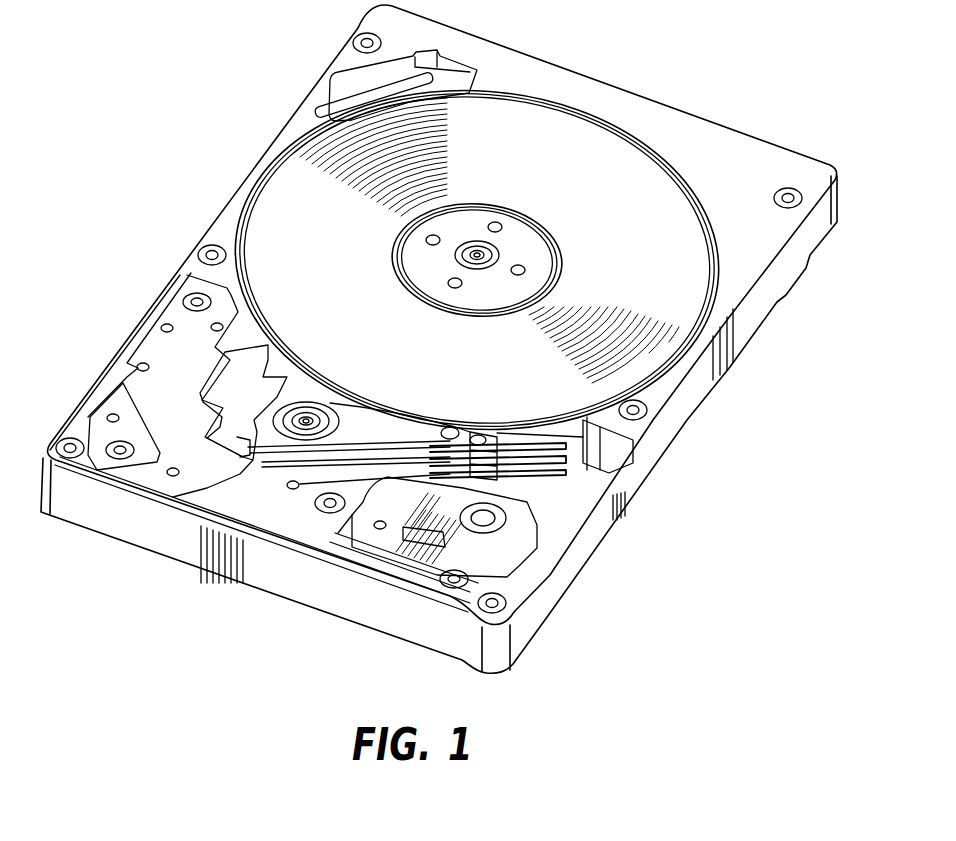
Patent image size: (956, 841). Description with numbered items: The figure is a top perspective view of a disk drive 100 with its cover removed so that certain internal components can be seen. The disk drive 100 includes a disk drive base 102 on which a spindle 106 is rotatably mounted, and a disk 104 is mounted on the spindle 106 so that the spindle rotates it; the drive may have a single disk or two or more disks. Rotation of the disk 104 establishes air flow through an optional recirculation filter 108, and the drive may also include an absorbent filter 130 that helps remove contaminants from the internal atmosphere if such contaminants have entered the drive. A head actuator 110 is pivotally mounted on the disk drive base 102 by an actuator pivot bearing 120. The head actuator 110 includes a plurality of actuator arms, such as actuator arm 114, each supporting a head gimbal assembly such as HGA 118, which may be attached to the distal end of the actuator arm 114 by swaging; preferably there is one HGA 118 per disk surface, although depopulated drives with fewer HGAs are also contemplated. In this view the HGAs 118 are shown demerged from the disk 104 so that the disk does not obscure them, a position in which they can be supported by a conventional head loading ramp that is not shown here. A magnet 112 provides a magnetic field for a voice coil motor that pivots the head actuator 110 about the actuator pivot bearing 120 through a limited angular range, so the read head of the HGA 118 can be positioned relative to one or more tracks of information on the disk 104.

The disk drive 100 is at (640, 60).
The disk drive base 102 is at (743, 317).
The disk 104 is at (333, 272).
The spindle 106 is at (477, 220).
The recirculation filter 108 is at (363, 95).
The head actuator 110 is at (173, 497).
The magnet 112 is at (160, 350).
The actuator arm 114 is at (378, 423).
The head gimbal assembly 118 is at (520, 440).
The actuator pivot bearing 120 is at (306, 402).
The absorbent filter 130 is at (527, 550).